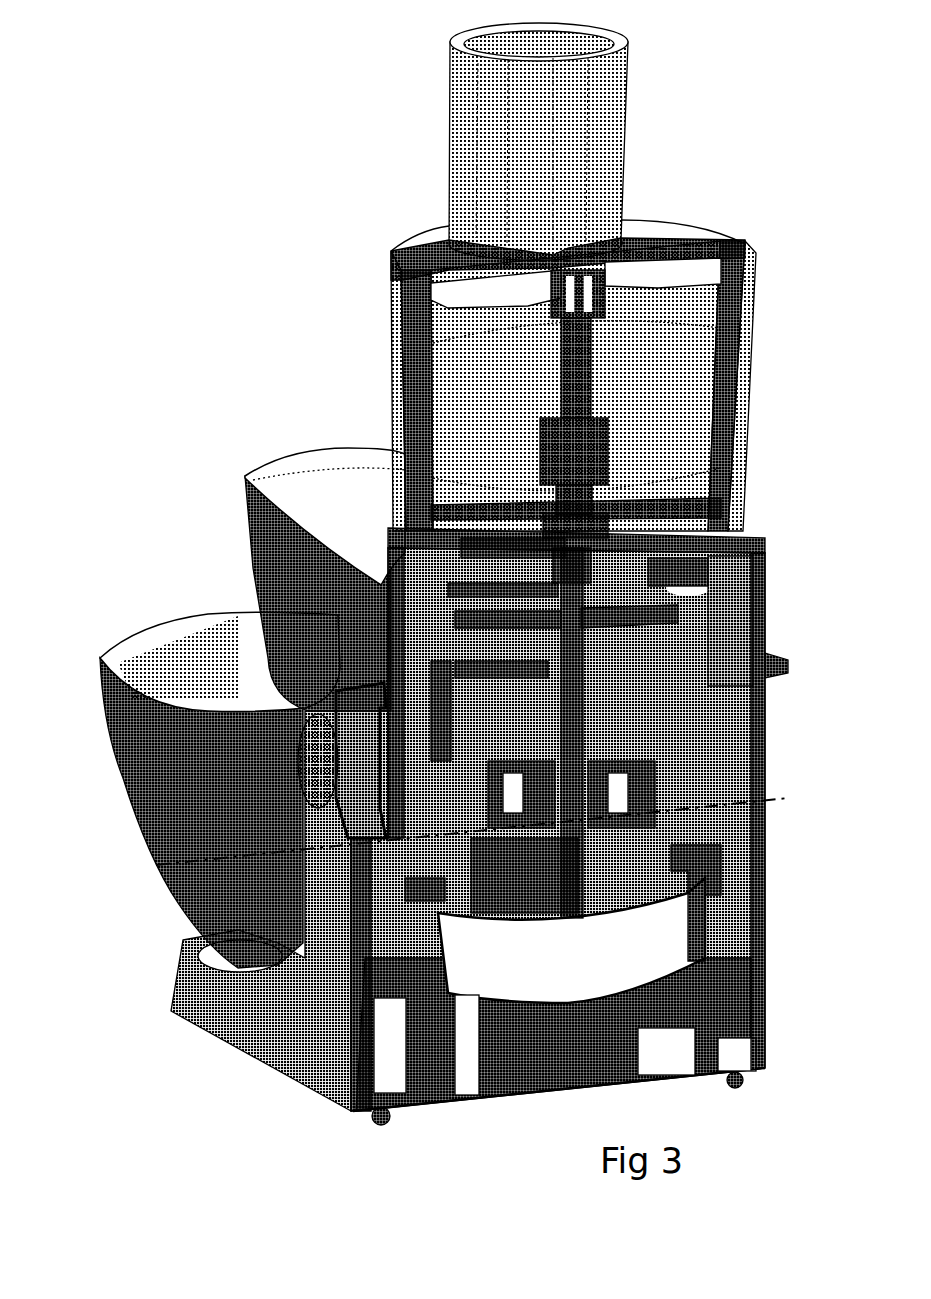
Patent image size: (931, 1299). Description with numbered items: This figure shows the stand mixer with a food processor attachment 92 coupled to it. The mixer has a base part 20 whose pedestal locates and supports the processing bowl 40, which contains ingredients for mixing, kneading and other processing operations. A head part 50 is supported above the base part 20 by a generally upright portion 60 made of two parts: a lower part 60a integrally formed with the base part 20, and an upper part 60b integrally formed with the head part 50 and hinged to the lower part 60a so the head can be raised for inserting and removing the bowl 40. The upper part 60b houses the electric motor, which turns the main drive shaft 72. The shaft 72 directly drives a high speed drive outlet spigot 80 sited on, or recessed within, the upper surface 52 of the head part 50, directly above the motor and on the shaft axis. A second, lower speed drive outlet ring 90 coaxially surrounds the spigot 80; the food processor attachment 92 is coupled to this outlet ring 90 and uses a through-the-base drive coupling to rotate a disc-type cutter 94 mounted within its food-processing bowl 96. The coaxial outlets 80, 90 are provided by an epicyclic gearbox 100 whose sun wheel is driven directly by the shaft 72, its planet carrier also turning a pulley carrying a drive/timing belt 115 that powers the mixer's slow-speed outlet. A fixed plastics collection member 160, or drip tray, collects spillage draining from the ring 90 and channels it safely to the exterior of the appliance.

The base part 20 is at (273, 1055).
The processing bowl 40 is at (127, 753).
The head part 50 is at (205, 477).
The upper surface 52 is at (327, 462).
The upright portion 60 is at (790, 714).
The lower part 60a is at (758, 850).
The upper part 60b is at (753, 578).
The main drive shaft 72 is at (565, 718).
The high speed drive outlet spigot 80 is at (567, 518).
The drive outlet ring 90 is at (587, 487).
The food processor attachment 92 is at (765, 346).
The disc-type cutter 94 is at (673, 268).
The food-processing bowl 96 is at (718, 302).
The epicyclic gearbox 100 is at (668, 622).
The drive/timing belt 115 is at (513, 570).
The collection member 160 is at (655, 570).